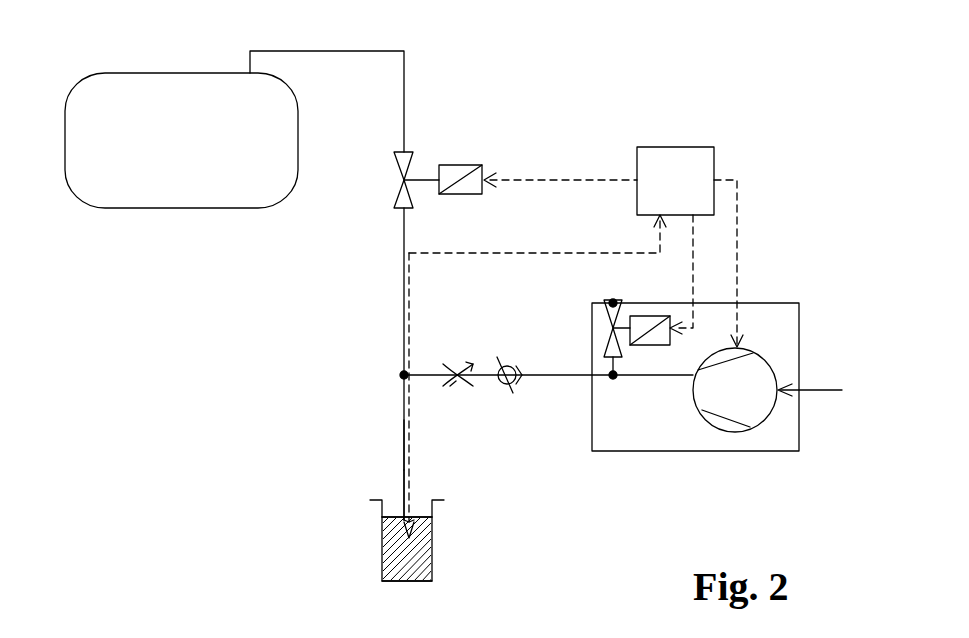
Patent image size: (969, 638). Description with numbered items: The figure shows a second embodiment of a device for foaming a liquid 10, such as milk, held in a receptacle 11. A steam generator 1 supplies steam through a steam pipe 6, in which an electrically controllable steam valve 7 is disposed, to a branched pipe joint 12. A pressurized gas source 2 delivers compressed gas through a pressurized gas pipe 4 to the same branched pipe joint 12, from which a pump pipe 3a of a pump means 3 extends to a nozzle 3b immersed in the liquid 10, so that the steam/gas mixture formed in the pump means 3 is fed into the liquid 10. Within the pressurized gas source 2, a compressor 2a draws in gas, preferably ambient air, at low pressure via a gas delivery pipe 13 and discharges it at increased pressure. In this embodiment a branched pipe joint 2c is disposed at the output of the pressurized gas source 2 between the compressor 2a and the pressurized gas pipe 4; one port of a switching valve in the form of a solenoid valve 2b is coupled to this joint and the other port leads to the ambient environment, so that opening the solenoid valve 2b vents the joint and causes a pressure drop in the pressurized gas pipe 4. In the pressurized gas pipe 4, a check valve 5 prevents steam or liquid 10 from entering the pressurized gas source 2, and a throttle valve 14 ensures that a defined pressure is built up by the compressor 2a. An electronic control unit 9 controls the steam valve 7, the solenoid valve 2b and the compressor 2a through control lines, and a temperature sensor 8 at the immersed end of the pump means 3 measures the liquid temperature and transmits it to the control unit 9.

The steam generator 1 is at (177, 200).
The pressurized gas source 2 is at (775, 310).
The compressor 2a is at (727, 428).
The solenoid valve 2b is at (610, 306).
The branched pipe joint 2c is at (613, 380).
The pump means 3 is at (296, 427).
The pump pipe 3a is at (404, 452).
The nozzle 3b is at (404, 542).
The pressurized gas pipe 4 is at (550, 375).
The check valve 5 is at (507, 362).
The steam pipe 6 is at (404, 95).
The steam valve 7 is at (402, 193).
The temperature sensor 8 is at (432, 528).
The electronic control unit 9 is at (680, 160).
The liquid 10 is at (388, 570).
The receptacle 11 is at (432, 562).
The branched pipe joint 12 is at (404, 375).
The gas delivery pipe 13 is at (827, 390).
The throttle valve 14 is at (458, 362).